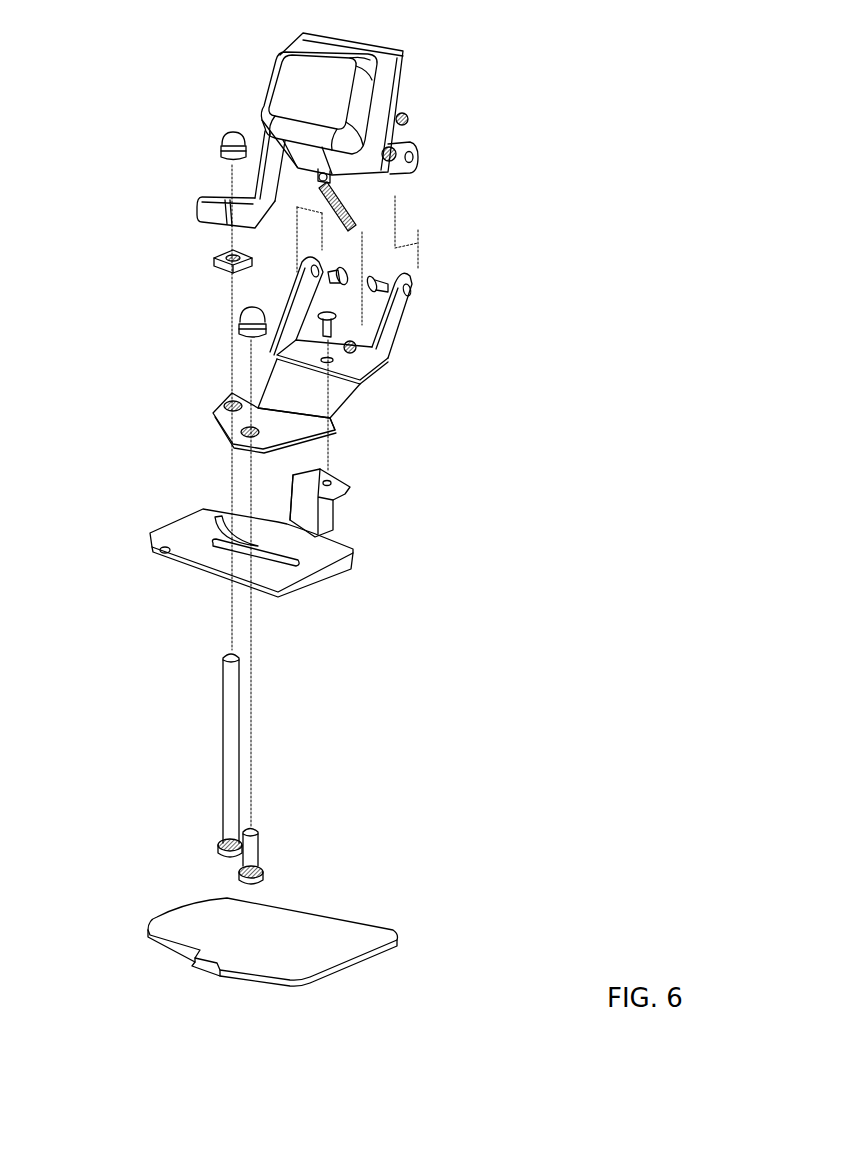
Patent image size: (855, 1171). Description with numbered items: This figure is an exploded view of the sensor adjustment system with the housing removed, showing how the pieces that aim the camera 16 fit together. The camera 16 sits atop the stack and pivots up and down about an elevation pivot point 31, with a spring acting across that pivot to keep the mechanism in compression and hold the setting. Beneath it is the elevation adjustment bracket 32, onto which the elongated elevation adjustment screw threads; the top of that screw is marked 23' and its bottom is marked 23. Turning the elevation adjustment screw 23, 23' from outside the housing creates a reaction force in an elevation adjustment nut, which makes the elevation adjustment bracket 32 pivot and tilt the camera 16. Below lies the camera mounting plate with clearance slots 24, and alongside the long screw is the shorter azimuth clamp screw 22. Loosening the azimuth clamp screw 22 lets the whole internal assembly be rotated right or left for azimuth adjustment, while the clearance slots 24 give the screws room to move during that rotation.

The camera 16 is at (372, 72).
The elevation pivot point 31 is at (392, 146).
The elevation adjustment bracket 32 is at (390, 328).
The clearance slots 24 is at (297, 562).
The top of the elongated elevation adjustment screw 23' is at (130, 748).
The bottom of the elongated elevation adjustment screw 23 is at (135, 882).
The azimuth clamp screw 22 is at (265, 878).